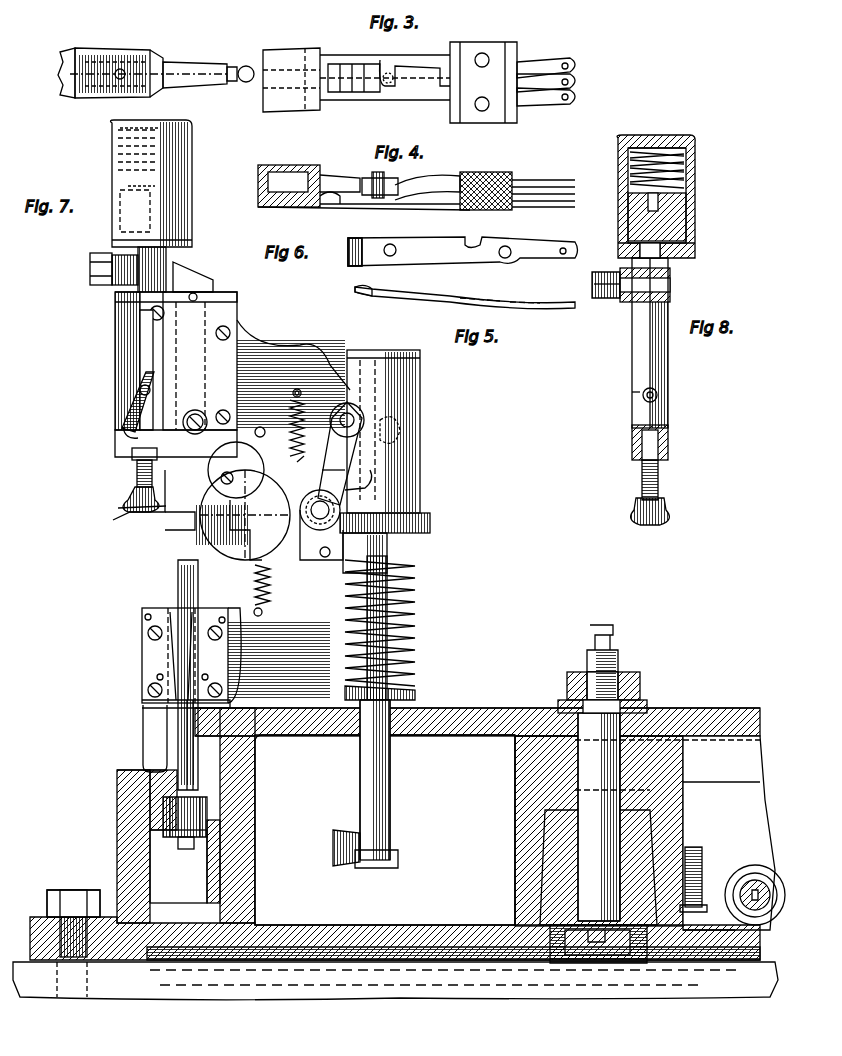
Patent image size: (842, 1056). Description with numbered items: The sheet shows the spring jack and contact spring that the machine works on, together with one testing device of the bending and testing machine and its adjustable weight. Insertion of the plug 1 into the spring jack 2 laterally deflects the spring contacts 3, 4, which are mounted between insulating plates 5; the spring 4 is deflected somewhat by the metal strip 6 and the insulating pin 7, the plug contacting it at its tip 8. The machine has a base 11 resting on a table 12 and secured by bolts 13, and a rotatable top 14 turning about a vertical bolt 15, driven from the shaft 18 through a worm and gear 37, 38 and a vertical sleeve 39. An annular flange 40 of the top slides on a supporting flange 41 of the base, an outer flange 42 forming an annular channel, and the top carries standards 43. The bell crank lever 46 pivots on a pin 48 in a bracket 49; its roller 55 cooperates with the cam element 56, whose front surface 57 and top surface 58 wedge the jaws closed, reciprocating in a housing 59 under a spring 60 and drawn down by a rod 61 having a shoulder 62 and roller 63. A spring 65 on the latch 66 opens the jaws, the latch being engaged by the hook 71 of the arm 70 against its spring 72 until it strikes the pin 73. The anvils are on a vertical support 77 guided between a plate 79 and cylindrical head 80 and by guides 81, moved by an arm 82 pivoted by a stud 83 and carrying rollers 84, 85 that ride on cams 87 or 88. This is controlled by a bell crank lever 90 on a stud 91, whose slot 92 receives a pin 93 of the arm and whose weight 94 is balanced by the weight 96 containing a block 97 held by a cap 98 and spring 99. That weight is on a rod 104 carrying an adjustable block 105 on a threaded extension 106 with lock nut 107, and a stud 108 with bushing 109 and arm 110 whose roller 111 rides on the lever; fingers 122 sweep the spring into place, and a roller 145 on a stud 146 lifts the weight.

In FIG. 3, the plug 1 is at (207, 62).
In FIG. 3, the spring jack 2 is at (310, 50).
In FIG. 4, the spring contact 3 is at (335, 198).
In FIG. 6, the spring contact 4 is at (410, 240).
In FIG. 5, the spring contact 4 is at (423, 296).
In FIG. 4, the insulating plates 5 is at (522, 188).
In FIG. 4, the metal strip 6 is at (435, 176).
In FIG. 4, the pin 7 is at (378, 178).
In FIG. 4, the tip 8 is at (350, 183).
In FIG. 6, the tip 8 is at (348, 251).
In FIG. 5, the tip 8 is at (355, 290).
In FIG. 7, the base 11 is at (265, 955).
In FIG. 7, the table 12 is at (135, 985).
In FIG. 7, the bolts 13 is at (65, 895).
In FIG. 7, the rotatable top 14 is at (468, 718).
In FIG. 7, the vertical bolt 15 is at (585, 790).
In FIG. 7, the shaft 18 is at (755, 910).
In FIG. 7, the worm 37 is at (756, 868).
In FIG. 7, the gear 38 is at (720, 880).
In FIG. 7, the vertical sleeve 39 is at (665, 812).
In FIG. 7, the annular flange 40 is at (238, 762).
In FIG. 7, the supporting flange 41 is at (240, 806).
In FIG. 7, the outer flange 42 is at (118, 804).
In FIG. 7, the standard 43 is at (302, 740).
In FIG. 7, the bell crank lever 46 is at (380, 488).
In FIG. 7, the pin 48 is at (318, 520).
In FIG. 7, the bracket 49 is at (405, 548).
In FIG. 7, the roller 55 is at (375, 412).
In FIG. 7, the cam element 56 is at (370, 425).
In FIG. 7, the front surface 57 is at (368, 478).
In FIG. 7, the top surface 58 is at (386, 356).
In FIG. 7, the housing 59 is at (410, 448).
In FIG. 7, the spring 60 is at (405, 598).
In FIG. 7, the rod 61 is at (412, 622).
In FIG. 7, the shoulder 62 is at (398, 860).
In FIG. 7, the roller 63 is at (340, 862).
In FIG. 7, the spring 65 is at (288, 398).
In FIG. 7, the latch 66 is at (290, 460).
In FIG. 7, the arm 70 is at (240, 535).
In FIG. 7, the hook 71 is at (218, 525).
In FIG. 7, the spring 72 is at (272, 580).
In FIG. 7, the pin 73 is at (260, 427).
In FIG. 7, the vertical support 77 is at (200, 272).
In FIG. 7, the plate 79 is at (222, 318).
In FIG. 7, the cylindrical head 80 is at (118, 312).
In FIG. 7, the guides 81 is at (215, 652).
In FIG. 7, the arm 82 is at (178, 866).
In FIG. 7, the stud 83 is at (148, 686).
In FIG. 7, the outer roller 84 is at (180, 845).
In FIG. 7, the inner roller 85 is at (212, 792).
In FIG. 7, the cams 87 is at (118, 776).
In FIG. 7, the cams 88 is at (222, 840).
In FIG. 7, the bell crank lever 90 is at (193, 410).
In FIG. 7, the stud 91 is at (196, 414).
In FIG. 7, the slot 92 is at (152, 812).
In FIG. 7, the pin 93 is at (182, 780).
In FIG. 7, the weight 94 is at (225, 410).
In FIG. 8, the weight 96 is at (694, 185).
In FIG. 7, the weight 96 is at (178, 220).
In FIG. 8, the block of metal 97 is at (690, 218).
In FIG. 7, the block of metal 97 is at (158, 202).
In FIG. 8, the cap 98 is at (680, 140).
In FIG. 7, the cap 98 is at (178, 128).
In FIG. 8, the spring 99 is at (659, 170).
In FIG. 7, the spring 99 is at (178, 148).
In FIG. 8, the vertical rod 104 is at (640, 358).
In FIG. 7, the vertical rod 104 is at (165, 258).
In FIG. 8, the block 105 is at (638, 504).
In FIG. 7, the block 105 is at (126, 508).
In FIG. 8, the screw-threaded extension 106 is at (642, 468).
In FIG. 7, the screw-threaded extension 106 is at (137, 470).
In FIG. 8, the lock nut 107 is at (668, 462).
In FIG. 7, the lock nut 107 is at (132, 452).
In FIG. 8, the stud 108 is at (660, 396).
In FIG. 7, the stud 108 is at (140, 388).
In FIG. 8, the bushing 109 is at (643, 400).
In FIG. 7, the arm 110 is at (128, 410).
In FIG. 7, the roller 111 is at (125, 432).
In FIG. 7, the fingers 122 is at (170, 522).
In FIG. 8, the roller 145 is at (604, 300).
In FIG. 7, the roller 145 is at (100, 284).
In FIG. 8, the stud 146 is at (628, 300).
In FIG. 7, the stud 146 is at (93, 264).